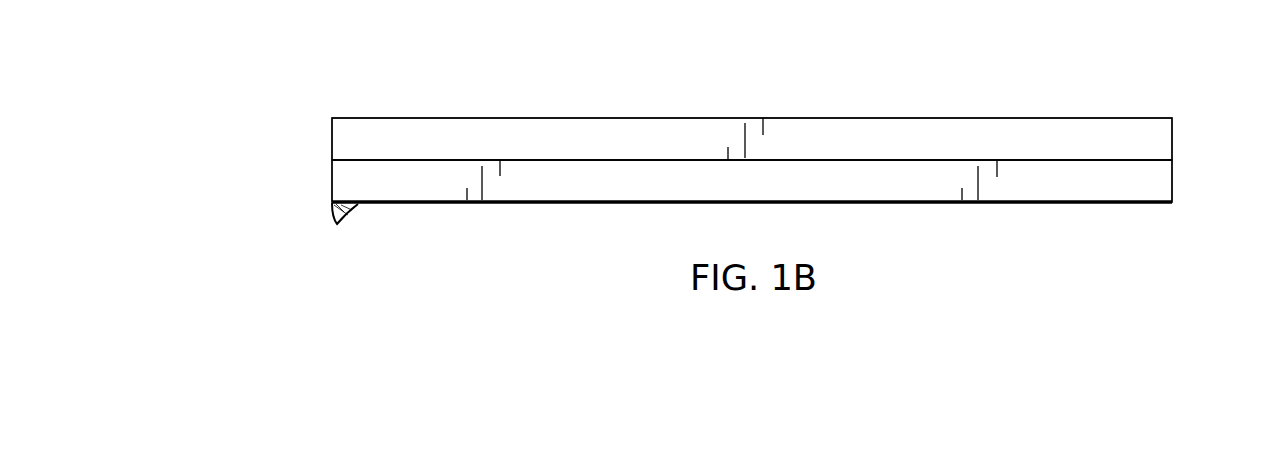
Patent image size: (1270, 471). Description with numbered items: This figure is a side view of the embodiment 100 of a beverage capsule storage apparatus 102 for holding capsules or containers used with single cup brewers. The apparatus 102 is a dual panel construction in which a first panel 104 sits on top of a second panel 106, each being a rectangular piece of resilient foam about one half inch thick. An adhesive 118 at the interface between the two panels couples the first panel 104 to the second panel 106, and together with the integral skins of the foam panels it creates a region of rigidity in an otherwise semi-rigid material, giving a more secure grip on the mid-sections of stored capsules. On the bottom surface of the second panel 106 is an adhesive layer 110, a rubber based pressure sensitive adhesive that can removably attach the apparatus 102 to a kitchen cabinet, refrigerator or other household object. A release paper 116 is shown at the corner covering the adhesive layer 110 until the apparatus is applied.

The embodiment 100 is at (399, 87).
The apparatus 102 is at (992, 114).
The first panel 104 is at (1172, 131).
The second panel 106 is at (1172, 178).
The adhesive layer 110 is at (332, 202).
The release paper 116 is at (350, 204).
The adhesive 118 is at (332, 160).